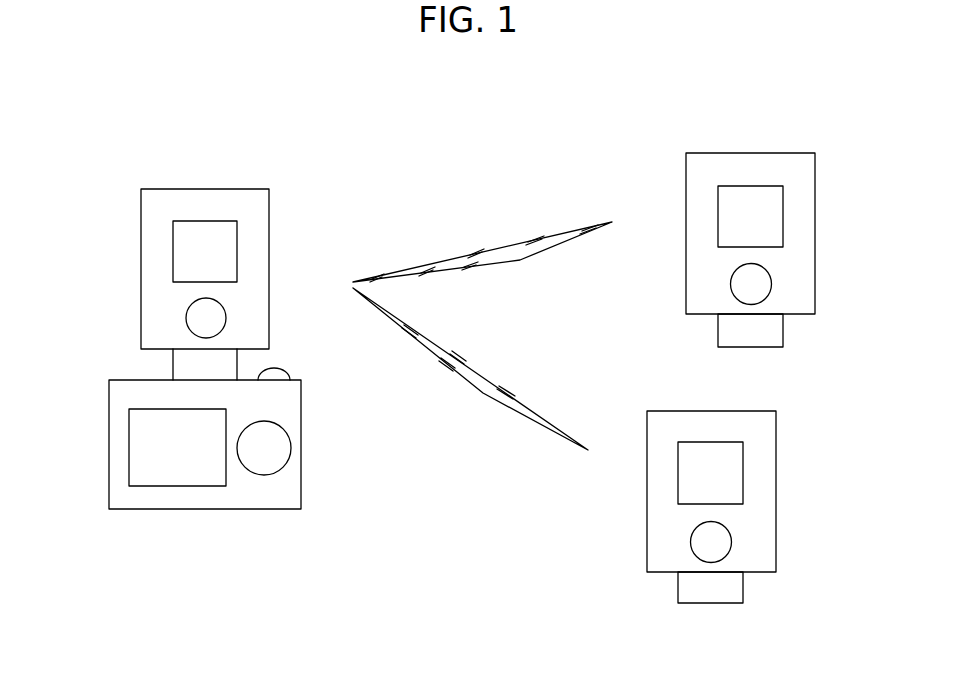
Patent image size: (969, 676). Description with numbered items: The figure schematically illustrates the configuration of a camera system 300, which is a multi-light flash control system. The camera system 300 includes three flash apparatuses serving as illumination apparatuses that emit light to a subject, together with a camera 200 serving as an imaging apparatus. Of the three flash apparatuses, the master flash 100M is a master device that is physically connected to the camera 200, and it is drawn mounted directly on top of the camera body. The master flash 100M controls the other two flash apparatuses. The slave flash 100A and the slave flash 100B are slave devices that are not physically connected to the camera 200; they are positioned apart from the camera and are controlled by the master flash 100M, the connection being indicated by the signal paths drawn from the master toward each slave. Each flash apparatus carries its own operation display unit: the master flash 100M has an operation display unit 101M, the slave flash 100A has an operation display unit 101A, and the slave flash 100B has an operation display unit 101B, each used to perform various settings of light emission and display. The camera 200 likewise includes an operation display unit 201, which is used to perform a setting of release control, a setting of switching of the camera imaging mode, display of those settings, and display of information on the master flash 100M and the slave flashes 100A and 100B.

The camera system 300 is at (443, 146).
The master flash 100M is at (271, 218).
The operation display unit 101M is at (187, 315).
The camera 200 is at (109, 447).
The operation display unit 201 is at (218, 422).
The slave flash 100A is at (816, 191).
The operation display unit 101A is at (737, 285).
The slave flash 100B is at (777, 471).
The operation display unit 101B is at (697, 538).